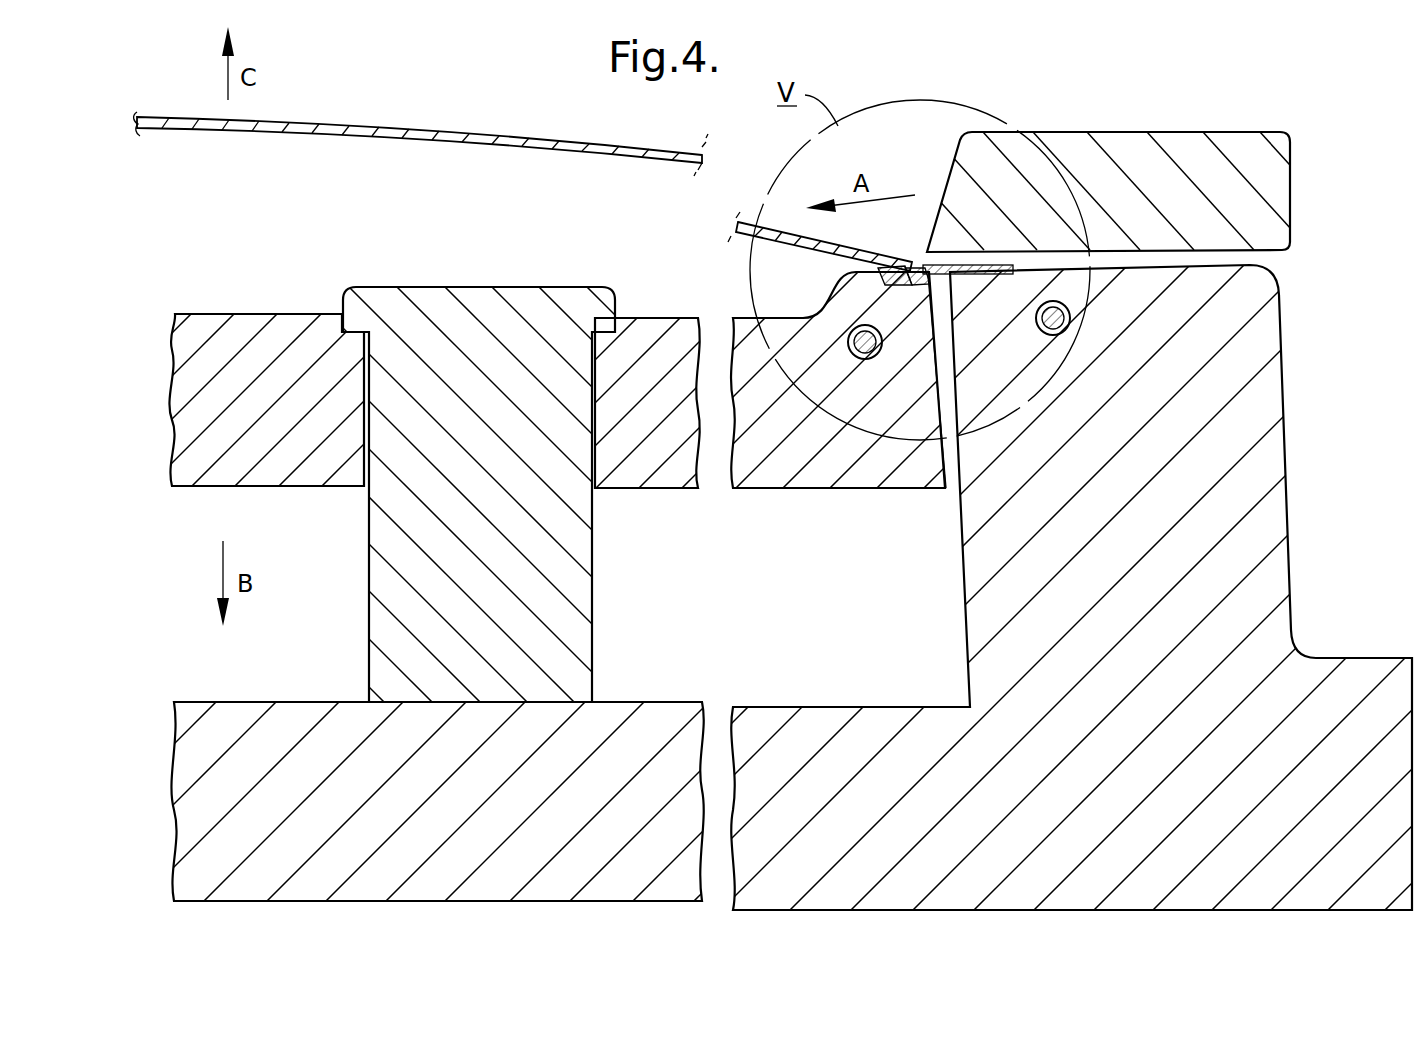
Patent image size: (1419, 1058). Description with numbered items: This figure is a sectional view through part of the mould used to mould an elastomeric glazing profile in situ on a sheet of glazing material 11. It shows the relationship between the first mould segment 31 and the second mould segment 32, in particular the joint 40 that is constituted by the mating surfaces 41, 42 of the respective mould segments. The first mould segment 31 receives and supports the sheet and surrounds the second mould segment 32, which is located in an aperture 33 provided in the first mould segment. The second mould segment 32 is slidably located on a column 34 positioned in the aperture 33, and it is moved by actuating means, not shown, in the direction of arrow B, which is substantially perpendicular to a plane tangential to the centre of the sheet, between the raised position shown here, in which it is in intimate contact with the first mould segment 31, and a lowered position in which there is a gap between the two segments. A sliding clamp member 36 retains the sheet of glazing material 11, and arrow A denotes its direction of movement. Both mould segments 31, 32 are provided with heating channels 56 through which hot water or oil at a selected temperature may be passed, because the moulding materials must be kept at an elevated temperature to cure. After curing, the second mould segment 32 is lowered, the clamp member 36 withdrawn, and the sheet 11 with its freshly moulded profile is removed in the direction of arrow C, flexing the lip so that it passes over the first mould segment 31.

The sheet of glazing material 11 is at (470, 127).
The first mould segment 31 is at (1134, 534).
The second mould segment 32 is at (285, 418).
The aperture 33 is at (790, 613).
The column 34 is at (498, 480).
The sliding clamp member 36 is at (1130, 203).
The joint 40 is at (937, 326).
The mating surface 41 is at (916, 316).
The mating surface 42 is at (948, 300).
The heating channel 56 is at (867, 361).